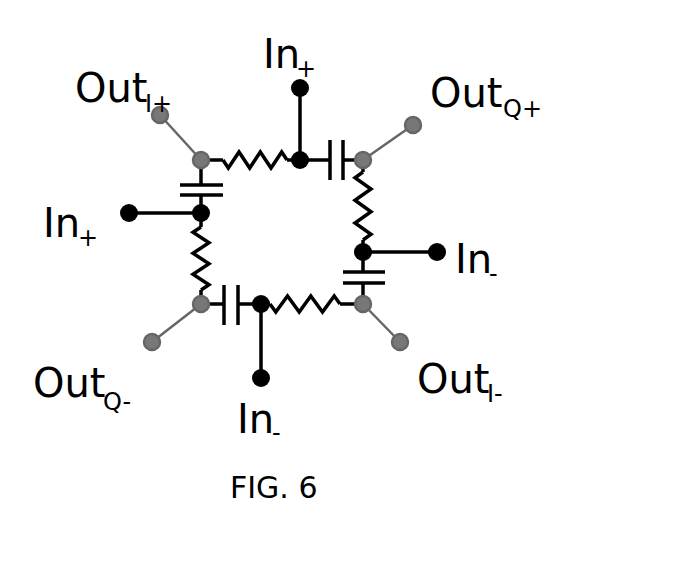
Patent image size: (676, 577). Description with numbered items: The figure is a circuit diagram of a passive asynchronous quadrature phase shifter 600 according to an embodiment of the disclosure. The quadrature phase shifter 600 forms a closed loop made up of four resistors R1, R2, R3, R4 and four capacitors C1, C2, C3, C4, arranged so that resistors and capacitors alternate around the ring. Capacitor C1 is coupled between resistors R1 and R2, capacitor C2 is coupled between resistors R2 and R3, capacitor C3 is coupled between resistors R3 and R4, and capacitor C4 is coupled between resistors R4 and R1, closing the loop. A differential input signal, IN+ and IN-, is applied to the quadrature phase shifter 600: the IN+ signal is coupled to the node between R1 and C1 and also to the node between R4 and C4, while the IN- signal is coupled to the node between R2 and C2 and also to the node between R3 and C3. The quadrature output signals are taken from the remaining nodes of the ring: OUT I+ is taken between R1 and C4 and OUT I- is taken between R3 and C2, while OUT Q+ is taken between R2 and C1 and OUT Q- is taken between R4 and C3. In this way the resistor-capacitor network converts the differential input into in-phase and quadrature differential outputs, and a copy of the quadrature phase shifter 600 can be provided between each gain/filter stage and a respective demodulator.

The passive asynchronous quadrature phase shifter 600 is at (389, 66).
The resistor R1 is at (255, 149).
The resistor R2 is at (381, 206).
The resistor R3 is at (305, 318).
The resistor R4 is at (184, 258).
The capacitor C1 is at (336, 150).
The capacitor C2 is at (382, 281).
The capacitor C3 is at (230, 318).
The capacitor C4 is at (186, 192).